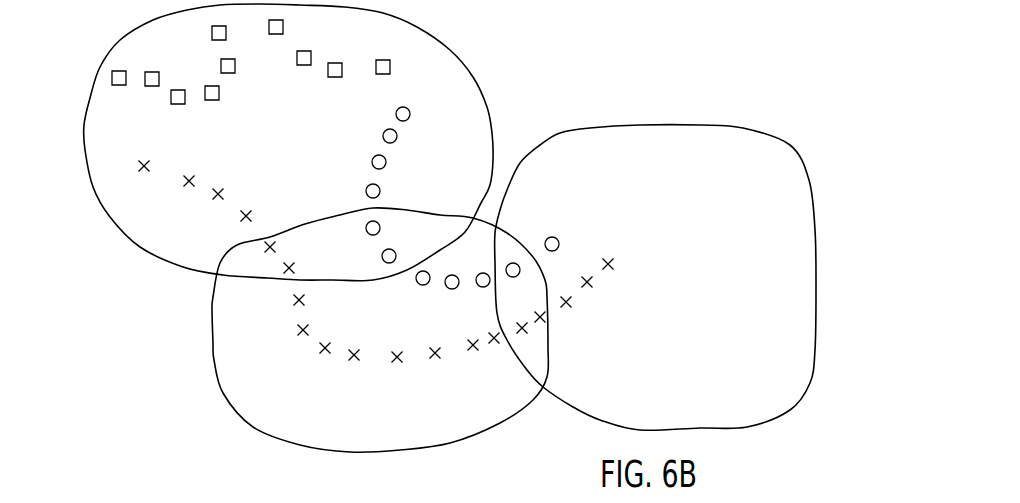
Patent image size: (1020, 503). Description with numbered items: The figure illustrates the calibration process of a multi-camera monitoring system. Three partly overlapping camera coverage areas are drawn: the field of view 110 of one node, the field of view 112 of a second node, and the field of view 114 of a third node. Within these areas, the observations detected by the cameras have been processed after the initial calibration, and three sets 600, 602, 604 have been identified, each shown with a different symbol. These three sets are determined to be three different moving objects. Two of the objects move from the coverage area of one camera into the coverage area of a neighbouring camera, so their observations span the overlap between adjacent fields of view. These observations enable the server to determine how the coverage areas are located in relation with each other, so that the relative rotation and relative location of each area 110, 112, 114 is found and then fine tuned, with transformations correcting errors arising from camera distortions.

The field of view 110 is at (492, 113).
The field of view 112 is at (510, 395).
The field of view 114 is at (778, 140).
The set of observations 600 is at (233, 102).
The set of observations 602 is at (138, 192).
The set of observations 604 is at (415, 133).